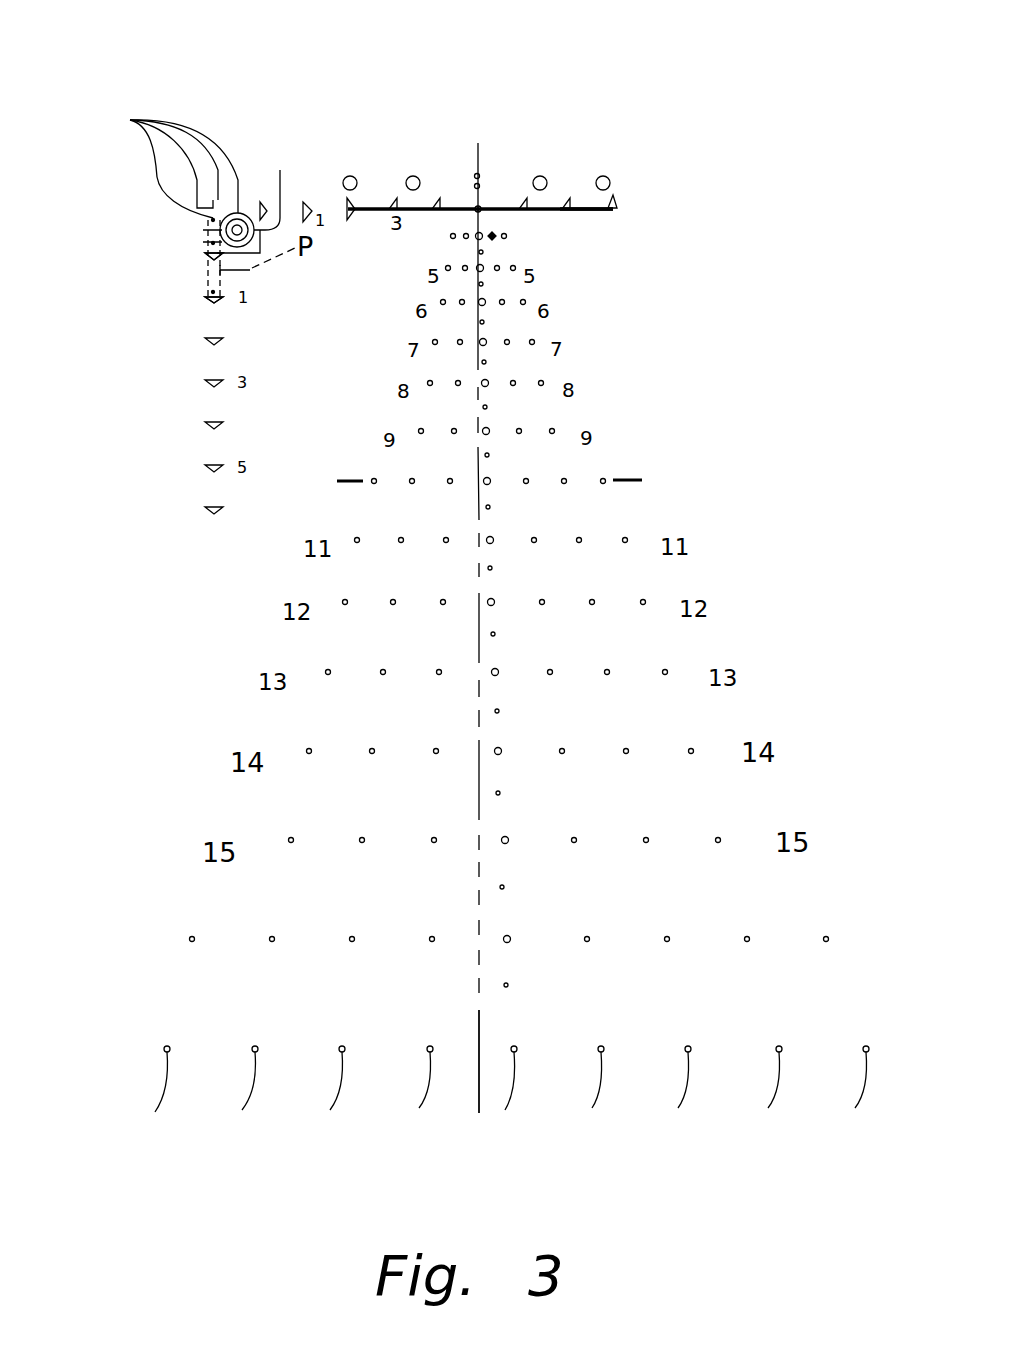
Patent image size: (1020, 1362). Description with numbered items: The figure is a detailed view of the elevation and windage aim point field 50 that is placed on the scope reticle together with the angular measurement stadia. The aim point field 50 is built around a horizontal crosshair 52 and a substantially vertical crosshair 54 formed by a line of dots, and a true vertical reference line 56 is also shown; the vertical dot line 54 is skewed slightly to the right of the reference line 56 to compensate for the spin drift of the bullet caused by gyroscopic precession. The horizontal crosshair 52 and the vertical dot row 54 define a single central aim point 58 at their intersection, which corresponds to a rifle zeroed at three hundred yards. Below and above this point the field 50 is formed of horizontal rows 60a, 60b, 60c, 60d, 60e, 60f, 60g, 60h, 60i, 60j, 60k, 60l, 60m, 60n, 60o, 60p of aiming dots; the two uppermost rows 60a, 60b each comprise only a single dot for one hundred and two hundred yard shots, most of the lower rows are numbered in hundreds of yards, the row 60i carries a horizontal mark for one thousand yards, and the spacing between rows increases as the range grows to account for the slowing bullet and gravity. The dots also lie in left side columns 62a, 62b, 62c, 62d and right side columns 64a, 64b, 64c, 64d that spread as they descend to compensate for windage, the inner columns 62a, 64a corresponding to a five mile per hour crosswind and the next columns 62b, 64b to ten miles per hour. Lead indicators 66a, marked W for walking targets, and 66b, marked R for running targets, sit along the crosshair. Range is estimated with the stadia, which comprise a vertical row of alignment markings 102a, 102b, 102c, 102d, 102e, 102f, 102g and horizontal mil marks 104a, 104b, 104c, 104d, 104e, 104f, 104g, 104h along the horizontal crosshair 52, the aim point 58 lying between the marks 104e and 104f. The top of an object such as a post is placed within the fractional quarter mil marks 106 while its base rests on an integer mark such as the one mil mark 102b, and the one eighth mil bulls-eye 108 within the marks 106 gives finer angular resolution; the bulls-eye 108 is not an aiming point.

The elevation and windage aim point field 50 is at (158, 1172).
The horizontal crosshair 52 is at (588, 211).
The vertical crosshair 54 is at (504, 1096).
The true vertical reference line 56 is at (478, 1113).
The aim point 58 is at (523, 202).
The horizontal row 60a is at (480, 197).
The horizontal row 60b is at (475, 185).
The horizontal row 60c is at (453, 236).
The horizontal row 60d is at (423, 273).
The horizontal row 60e is at (413, 312).
The horizontal row 60f is at (405, 347).
The horizontal row 60g is at (395, 388).
The horizontal row 60h is at (382, 437).
The horizontal row 60i is at (337, 482).
The horizontal row 60j is at (297, 547).
The horizontal row 60k is at (275, 610).
The horizontal row 60l is at (250, 682).
The horizontal row 60m is at (217, 762).
The horizontal row 60n is at (193, 848).
The horizontal row 60o is at (188, 940).
The horizontal row 60p is at (163, 1050).
The left side column 62a is at (427, 1096).
The left side column 62b is at (338, 1096).
The left side column 62c is at (246, 1096).
The left side column 62d is at (151, 1096).
The right side column 64a is at (600, 1096).
The right side column 64b is at (684, 1096).
The right side column 64c is at (769, 1096).
The right side column 64d is at (856, 1096).
The lead indicator 66a is at (410, 176).
The lead indicator 66b is at (347, 176).
The stadia alignment marking 102a is at (205, 254).
The stadia alignment marking 102b is at (205, 297).
The stadia alignment marking 102c is at (205, 340).
The stadia alignment marking 102d is at (205, 382).
The stadia alignment marking 102e is at (205, 424).
The stadia alignment marking 102f is at (205, 467).
The stadia alignment marking 102g is at (205, 509).
The horizontal mil mark 104a is at (260, 202).
The horizontal mil mark 104b is at (307, 202).
The horizontal mil mark 104c is at (347, 205).
The horizontal mil mark 104d is at (392, 202).
The horizontal mil mark 104e is at (435, 202).
The horizontal mil mark 104f is at (545, 177).
The horizontal mil mark 104g is at (610, 176).
The horizontal mil mark 104h is at (617, 203).
The fractional mil marks 106 is at (166, 177).
The bulls-eye 108 is at (280, 186).